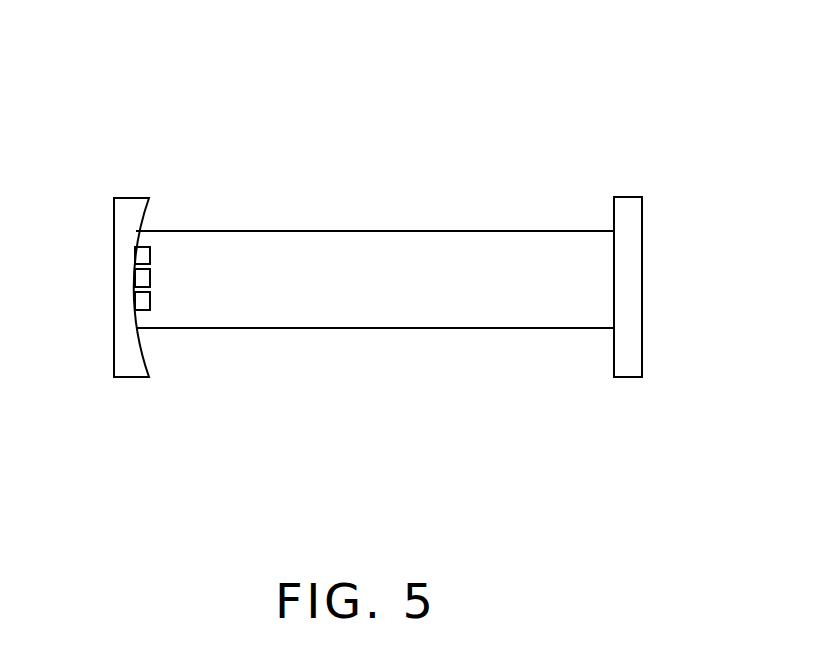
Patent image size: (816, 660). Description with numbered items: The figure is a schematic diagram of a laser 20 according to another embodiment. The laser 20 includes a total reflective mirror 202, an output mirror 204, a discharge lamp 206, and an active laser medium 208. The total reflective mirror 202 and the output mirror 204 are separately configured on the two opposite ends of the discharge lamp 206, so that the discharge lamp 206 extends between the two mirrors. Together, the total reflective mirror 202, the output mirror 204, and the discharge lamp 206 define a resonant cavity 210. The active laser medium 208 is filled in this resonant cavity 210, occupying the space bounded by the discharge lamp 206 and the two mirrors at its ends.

The laser 20 is at (387, 56).
The total reflective mirror 202 is at (125, 207).
The output mirror 204 is at (622, 209).
The discharge lamp 206 is at (323, 230).
The active laser medium 208 is at (498, 245).
The resonant cavity 210 is at (386, 308).